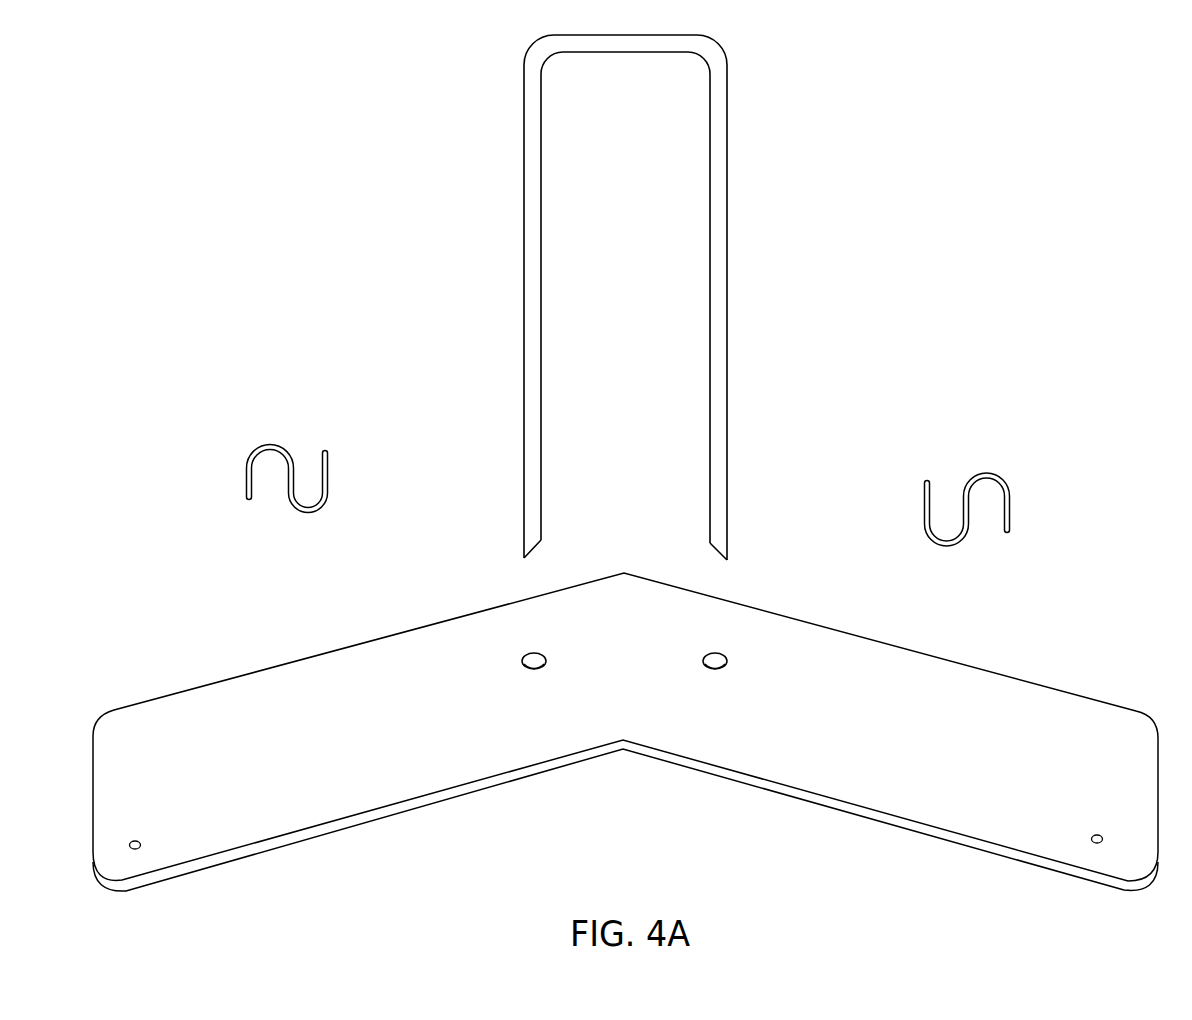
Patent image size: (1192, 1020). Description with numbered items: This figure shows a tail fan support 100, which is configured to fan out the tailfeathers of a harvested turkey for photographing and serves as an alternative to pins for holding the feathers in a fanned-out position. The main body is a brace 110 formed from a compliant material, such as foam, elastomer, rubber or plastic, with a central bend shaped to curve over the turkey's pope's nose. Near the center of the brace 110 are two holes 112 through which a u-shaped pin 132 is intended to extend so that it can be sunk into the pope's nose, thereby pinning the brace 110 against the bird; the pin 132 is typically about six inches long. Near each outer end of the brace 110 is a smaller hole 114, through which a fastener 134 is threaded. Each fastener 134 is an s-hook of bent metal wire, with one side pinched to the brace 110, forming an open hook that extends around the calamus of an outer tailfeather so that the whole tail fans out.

The tail fan support 100 is at (145, 170).
The brace 110 is at (390, 650).
The holes 112 is at (529, 668).
The holes 114 is at (137, 839).
The u-shaped pin 132 is at (525, 65).
The fasteners 134 is at (327, 472).